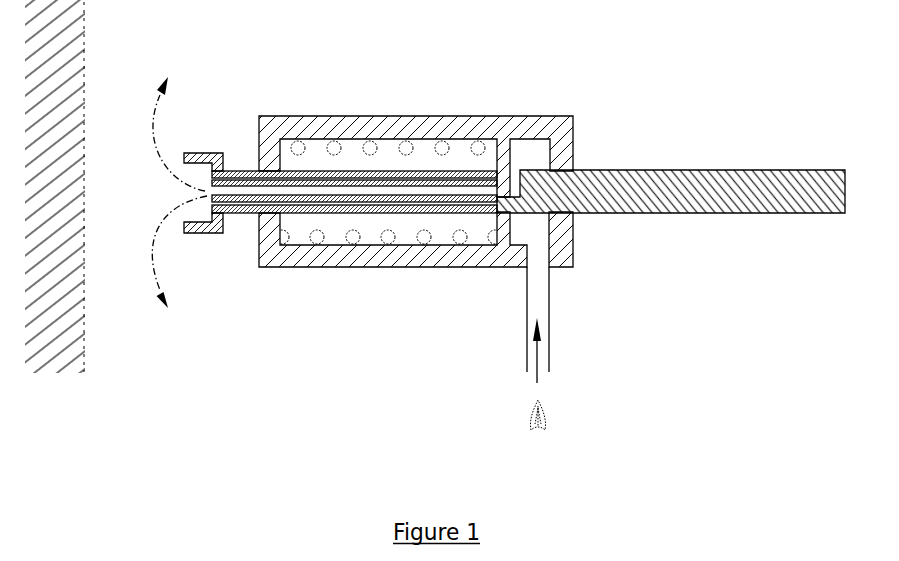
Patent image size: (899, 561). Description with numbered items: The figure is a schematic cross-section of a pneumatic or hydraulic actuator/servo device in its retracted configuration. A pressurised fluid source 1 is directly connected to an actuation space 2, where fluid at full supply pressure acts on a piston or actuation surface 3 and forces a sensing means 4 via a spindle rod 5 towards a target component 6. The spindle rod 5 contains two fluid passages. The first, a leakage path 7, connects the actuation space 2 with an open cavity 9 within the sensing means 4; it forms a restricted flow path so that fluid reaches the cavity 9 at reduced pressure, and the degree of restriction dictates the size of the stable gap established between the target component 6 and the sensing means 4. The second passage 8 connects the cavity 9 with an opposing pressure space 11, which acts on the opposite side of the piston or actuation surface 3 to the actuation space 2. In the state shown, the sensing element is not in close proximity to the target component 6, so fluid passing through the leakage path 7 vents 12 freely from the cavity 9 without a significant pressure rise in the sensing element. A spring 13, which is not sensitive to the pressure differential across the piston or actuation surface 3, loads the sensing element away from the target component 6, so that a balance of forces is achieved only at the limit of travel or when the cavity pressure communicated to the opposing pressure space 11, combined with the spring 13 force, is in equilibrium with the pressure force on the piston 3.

The pressurised fluid source 1 is at (537, 382).
The actuation space 2 is at (536, 229).
The piston or actuation surface 3 is at (572, 116).
The sensing means 4 is at (198, 233).
The spindle rod 5 is at (327, 213).
The target component 6 is at (83, 98).
The leakage path 7 is at (293, 192).
The second passage 8 is at (385, 205).
The cavity 9 is at (194, 189).
The opposing pressure space 11 is at (409, 223).
The vented leaking fluid 12 is at (179, 198).
The spring 13 is at (510, 157).